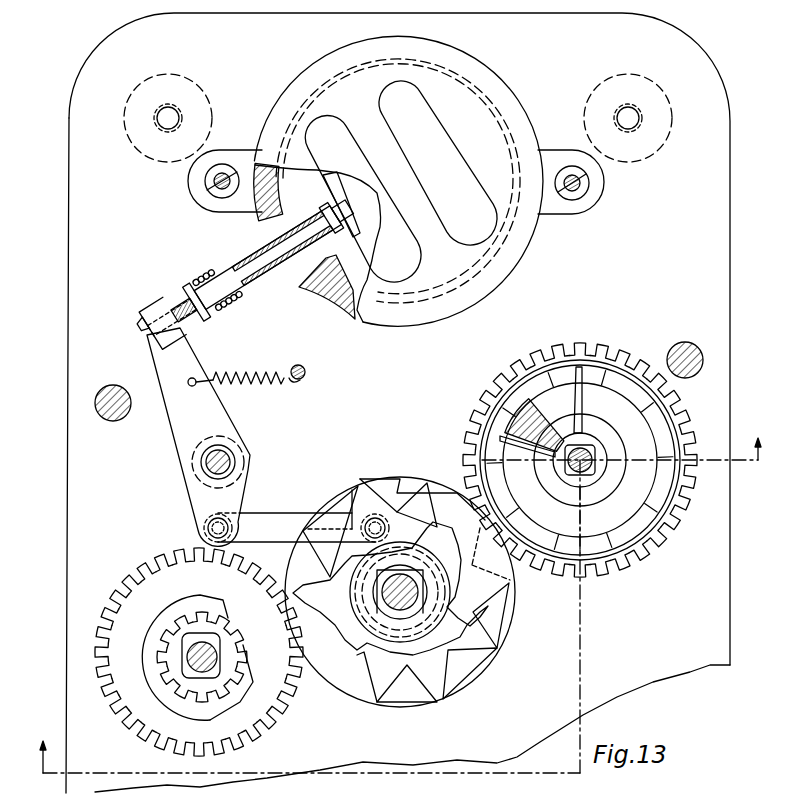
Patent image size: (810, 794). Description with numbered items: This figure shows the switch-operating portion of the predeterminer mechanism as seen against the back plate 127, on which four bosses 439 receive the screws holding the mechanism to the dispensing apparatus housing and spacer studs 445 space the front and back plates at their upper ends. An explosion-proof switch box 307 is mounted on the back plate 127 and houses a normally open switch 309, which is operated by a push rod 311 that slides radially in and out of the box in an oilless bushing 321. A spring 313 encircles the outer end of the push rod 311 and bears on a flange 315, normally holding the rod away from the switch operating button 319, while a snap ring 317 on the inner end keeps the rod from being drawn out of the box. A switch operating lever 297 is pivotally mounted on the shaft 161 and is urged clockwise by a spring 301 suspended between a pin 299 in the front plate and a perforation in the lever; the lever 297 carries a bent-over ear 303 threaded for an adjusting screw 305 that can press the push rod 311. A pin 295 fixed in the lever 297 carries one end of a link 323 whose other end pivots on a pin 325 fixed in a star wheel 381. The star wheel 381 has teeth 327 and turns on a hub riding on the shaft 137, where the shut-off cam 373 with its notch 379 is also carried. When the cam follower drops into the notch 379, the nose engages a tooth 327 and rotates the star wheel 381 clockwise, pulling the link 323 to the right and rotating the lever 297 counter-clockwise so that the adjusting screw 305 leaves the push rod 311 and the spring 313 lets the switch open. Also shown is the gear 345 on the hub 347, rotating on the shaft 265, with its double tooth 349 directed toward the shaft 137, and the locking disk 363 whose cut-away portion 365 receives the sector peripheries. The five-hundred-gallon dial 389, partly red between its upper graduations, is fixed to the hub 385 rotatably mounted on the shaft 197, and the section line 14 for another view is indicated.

The back plate 127 is at (643, 275).
The bosses 439 is at (138, 135).
The spacer studs 445 is at (100, 408).
The switch box 307 is at (455, 60).
The switch 309 is at (352, 183).
The oilless bushing 321 is at (257, 240).
The push rod 311 is at (232, 248).
The flange 315 is at (197, 310).
The bent-over ear 303 is at (165, 290).
The adjusting screw 305 is at (140, 325).
The spring 313 is at (196, 280).
The snap ring 317 is at (315, 240).
The switch operating button 319 is at (336, 214).
The switch operating lever 297 is at (180, 418).
The shaft 161 is at (212, 463).
The spring 301 is at (240, 366).
The pin 299 is at (307, 372).
The link 323 is at (260, 512).
The pin 295 is at (206, 528).
The pin 325 is at (383, 505).
The notch 379 is at (403, 478).
The teeth 327 is at (441, 466).
The dial 389 is at (612, 372).
The hub 385 is at (681, 404).
The shaft 197 is at (490, 405).
The shaft 265 is at (183, 663).
The locking disk 363 is at (214, 600).
The cut-away portion 365 is at (226, 605).
The double tooth 349 is at (242, 650).
The hub 347 is at (207, 678).
The gear 345 is at (176, 676).
The shaft 137 is at (385, 600).
The shut-off cam 373 is at (472, 670).
The star wheel 381 is at (492, 650).
The section line 14- 14 is at (400, 595).